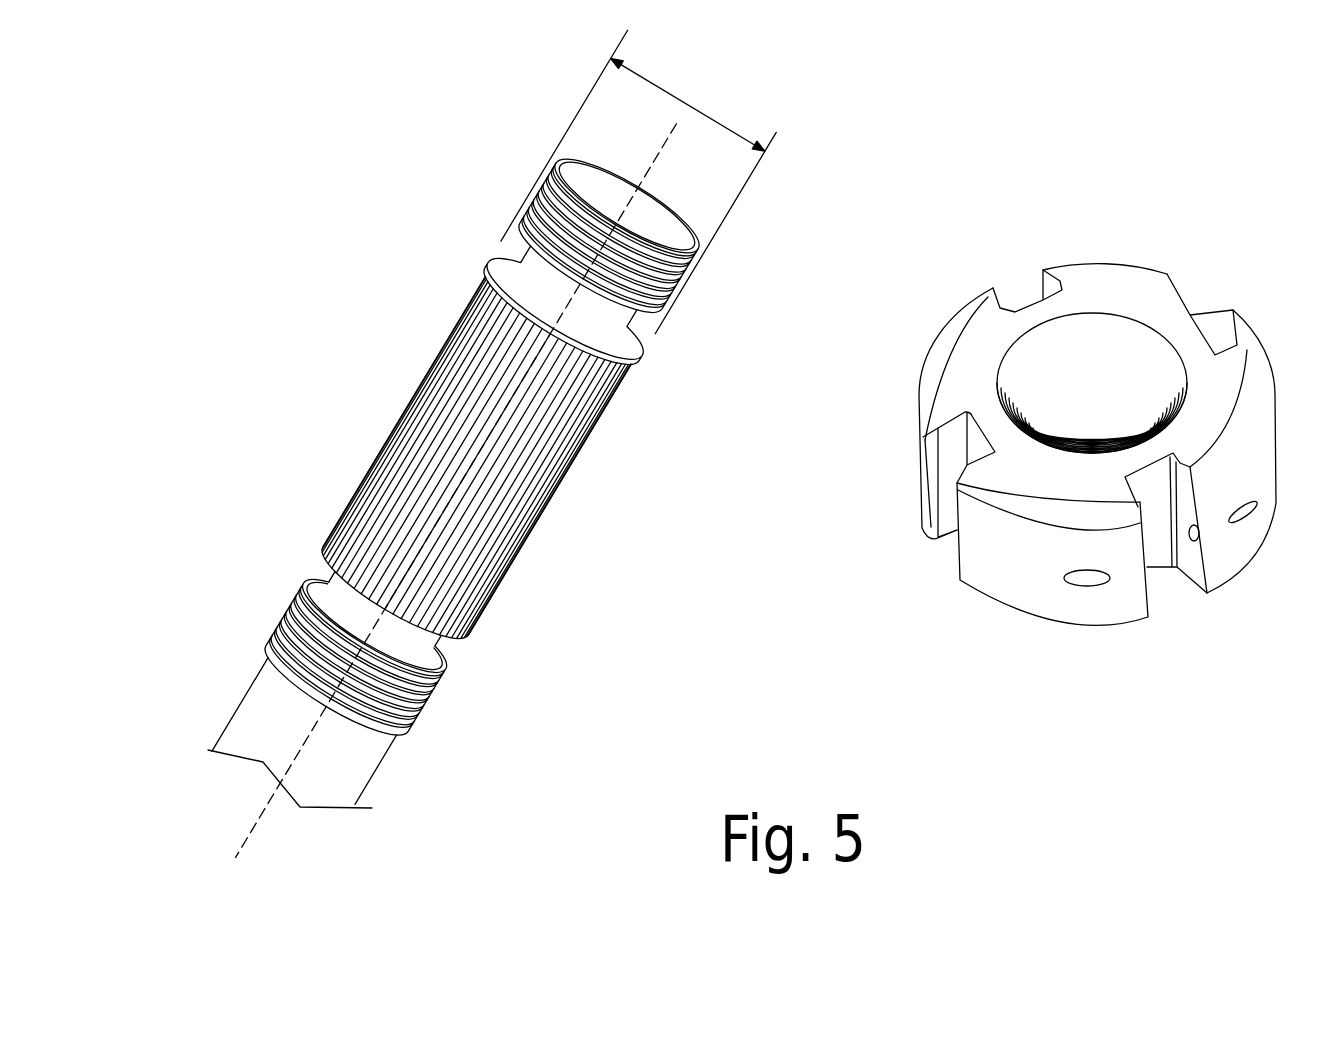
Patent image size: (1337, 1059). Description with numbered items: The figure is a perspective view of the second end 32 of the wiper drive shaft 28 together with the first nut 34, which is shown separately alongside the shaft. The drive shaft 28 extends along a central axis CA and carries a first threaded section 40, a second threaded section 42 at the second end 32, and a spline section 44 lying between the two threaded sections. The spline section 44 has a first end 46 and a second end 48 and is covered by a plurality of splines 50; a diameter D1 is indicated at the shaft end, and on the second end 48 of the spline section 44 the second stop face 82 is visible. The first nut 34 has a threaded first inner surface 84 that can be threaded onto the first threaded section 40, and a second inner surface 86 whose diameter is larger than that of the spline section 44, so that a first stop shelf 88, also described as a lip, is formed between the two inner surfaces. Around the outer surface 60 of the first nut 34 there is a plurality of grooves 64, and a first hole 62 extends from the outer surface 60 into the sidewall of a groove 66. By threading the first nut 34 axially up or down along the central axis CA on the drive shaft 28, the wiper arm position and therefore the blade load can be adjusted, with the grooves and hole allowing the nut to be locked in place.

The wiper drive shaft 28 is at (323, 781).
The second end 32 is at (648, 210).
The first nut 34 is at (1250, 214).
The first threaded section 40 is at (282, 606).
The second threaded section 42 is at (533, 158).
The spline section 44 is at (340, 392).
The first end 46 is at (521, 598).
The second end 48 is at (639, 391).
The plurality of splines 50 is at (413, 362).
The outer surface 60 is at (1013, 568).
The first hole 62 is at (1246, 528).
The plurality of grooves 64 is at (1202, 320).
The sidewall of a groove 66 is at (1190, 577).
The second stop face 82 is at (497, 260).
The first inner surface 84 is at (1028, 417).
The second inner surface 86 is at (1060, 343).
The first stop shelf 88 is at (1040, 387).
The central axis CA is at (254, 842).
The diameter D1 is at (641, 182).